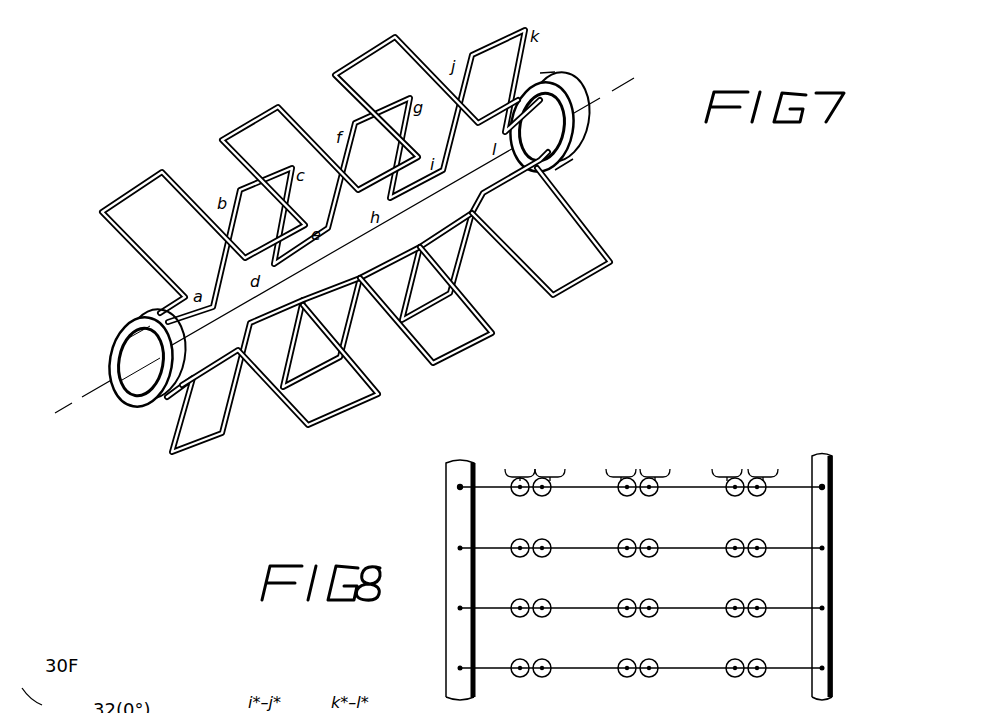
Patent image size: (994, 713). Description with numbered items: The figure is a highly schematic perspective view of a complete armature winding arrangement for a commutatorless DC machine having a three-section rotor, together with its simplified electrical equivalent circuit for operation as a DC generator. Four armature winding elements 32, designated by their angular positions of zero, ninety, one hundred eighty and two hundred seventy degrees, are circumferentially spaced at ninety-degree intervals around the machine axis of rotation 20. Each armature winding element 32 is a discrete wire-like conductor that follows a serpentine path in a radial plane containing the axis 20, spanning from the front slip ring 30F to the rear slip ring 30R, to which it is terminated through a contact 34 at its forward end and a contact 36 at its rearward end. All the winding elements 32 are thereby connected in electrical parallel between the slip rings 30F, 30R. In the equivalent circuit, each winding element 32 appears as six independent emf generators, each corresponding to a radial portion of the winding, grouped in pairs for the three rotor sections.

In FIG. 7, the machine axis of rotation 20 is at (630, 86).
In FIG. 7, the front slip ring 30F is at (132, 400).
In FIG. 8, the front slip ring 30F is at (449, 600).
In FIG. 7, the rear slip ring 30R is at (590, 142).
In FIG. 8, the rear slip ring 30R is at (833, 577).
In FIG. 7, the armature winding element 32 is at (262, 178).
In FIG. 8, the armature winding element 32 is at (492, 668).
In FIG. 8, the contact 34 is at (458, 488).
In FIG. 8, the contact 36 is at (832, 489).